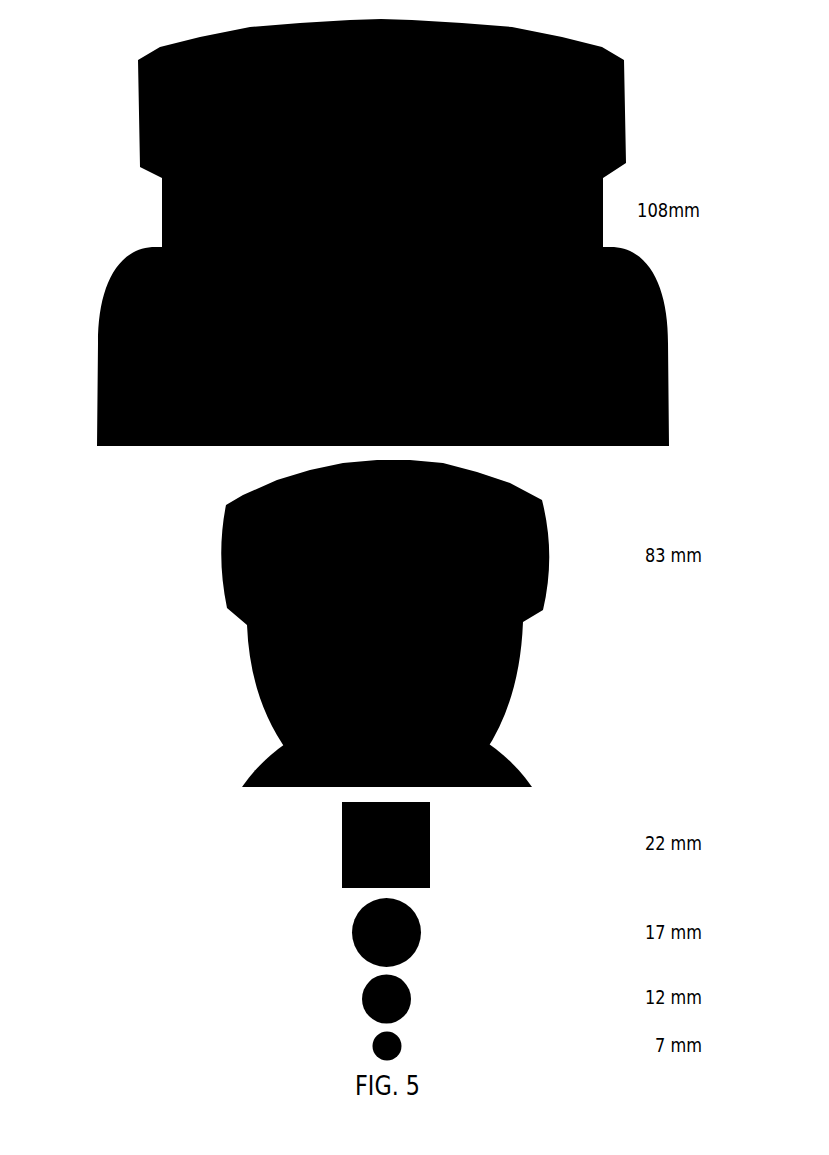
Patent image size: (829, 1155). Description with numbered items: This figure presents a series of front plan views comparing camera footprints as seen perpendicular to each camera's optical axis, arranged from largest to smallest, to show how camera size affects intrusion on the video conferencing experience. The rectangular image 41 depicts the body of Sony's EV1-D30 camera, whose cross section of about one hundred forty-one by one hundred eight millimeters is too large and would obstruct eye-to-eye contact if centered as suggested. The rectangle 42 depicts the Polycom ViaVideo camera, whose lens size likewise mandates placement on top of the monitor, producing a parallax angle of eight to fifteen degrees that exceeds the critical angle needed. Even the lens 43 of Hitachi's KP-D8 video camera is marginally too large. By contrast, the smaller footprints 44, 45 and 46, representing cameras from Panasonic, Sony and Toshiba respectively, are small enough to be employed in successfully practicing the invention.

The body footprint of Sony EV1-D30 camera 41 is at (162, 215).
The rectangle depicting Polycom ViaVideo camera 42 is at (220, 558).
The lens of Hitachi KP-D8 video camera 43 is at (342, 847).
The footprint of Panasonic GP-KS1000 camera 44 is at (352, 935).
The footprint of Sony DXC-LS1 camera 45 is at (362, 1001).
The footprint of Toshiba 1K-SM43H camera 46 is at (373, 1049).